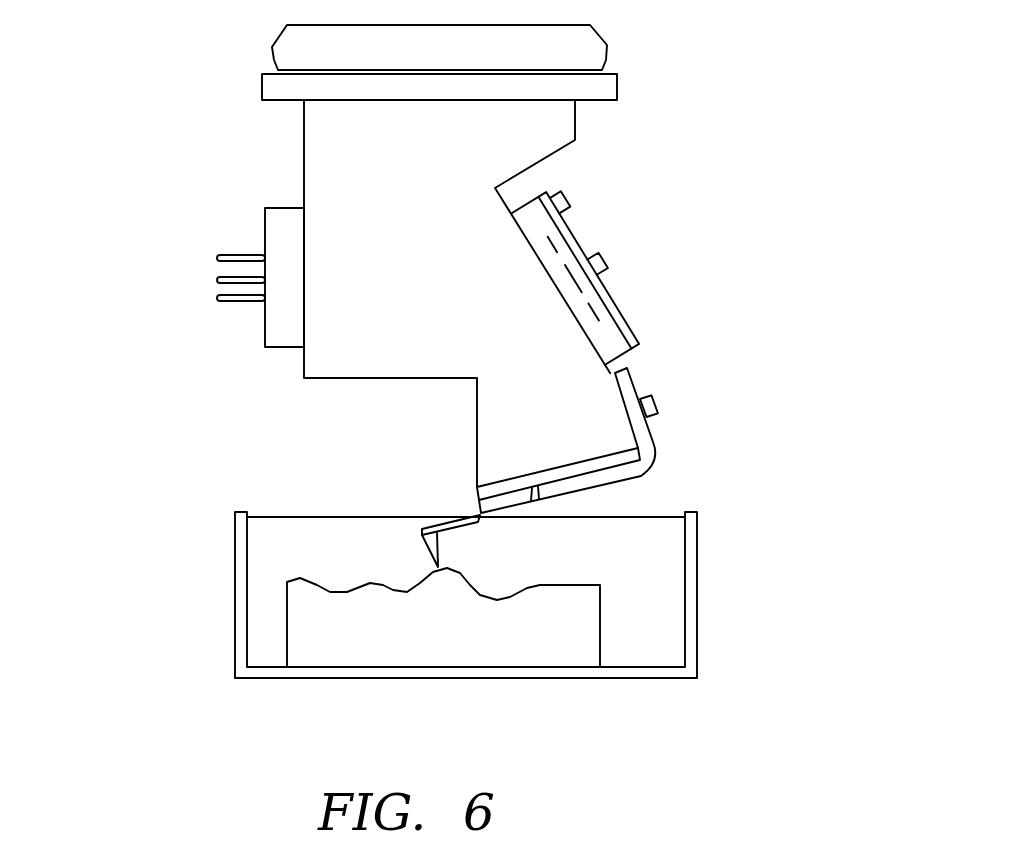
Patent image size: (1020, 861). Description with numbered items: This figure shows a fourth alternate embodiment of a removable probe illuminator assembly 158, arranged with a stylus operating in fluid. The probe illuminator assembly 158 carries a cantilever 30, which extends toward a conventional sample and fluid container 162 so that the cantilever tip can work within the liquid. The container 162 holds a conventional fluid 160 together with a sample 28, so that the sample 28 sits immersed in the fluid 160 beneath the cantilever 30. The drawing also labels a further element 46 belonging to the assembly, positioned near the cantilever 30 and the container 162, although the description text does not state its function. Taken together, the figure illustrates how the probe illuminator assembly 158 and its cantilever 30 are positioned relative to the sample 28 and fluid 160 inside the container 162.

The probe illuminator assembly 158 is at (588, 172).
The fluid 160 is at (287, 515).
The probe tip 46 is at (420, 548).
The cantilever 30 is at (423, 523).
The sample 28 is at (573, 580).
The sample and fluid container 162 is at (235, 611).